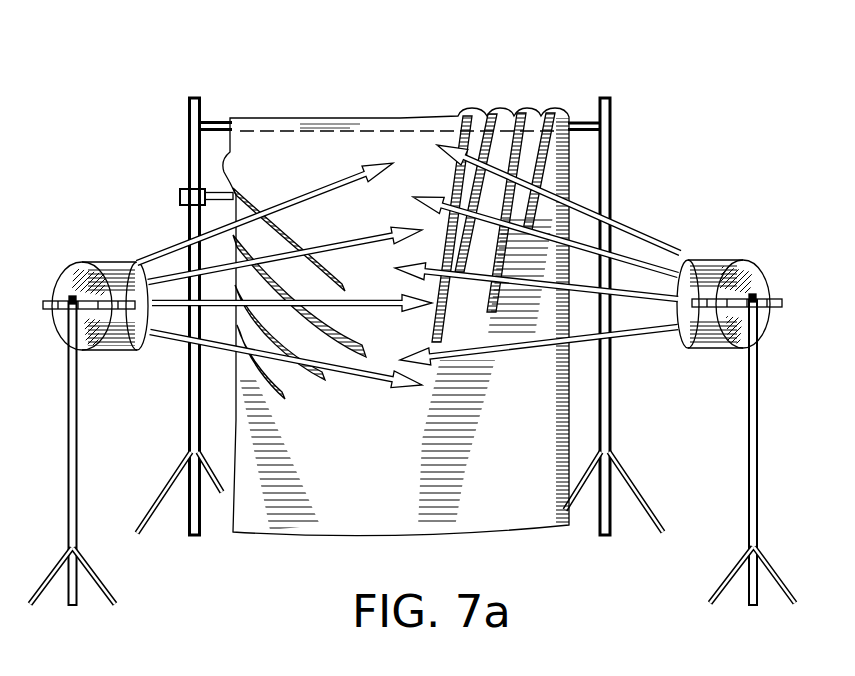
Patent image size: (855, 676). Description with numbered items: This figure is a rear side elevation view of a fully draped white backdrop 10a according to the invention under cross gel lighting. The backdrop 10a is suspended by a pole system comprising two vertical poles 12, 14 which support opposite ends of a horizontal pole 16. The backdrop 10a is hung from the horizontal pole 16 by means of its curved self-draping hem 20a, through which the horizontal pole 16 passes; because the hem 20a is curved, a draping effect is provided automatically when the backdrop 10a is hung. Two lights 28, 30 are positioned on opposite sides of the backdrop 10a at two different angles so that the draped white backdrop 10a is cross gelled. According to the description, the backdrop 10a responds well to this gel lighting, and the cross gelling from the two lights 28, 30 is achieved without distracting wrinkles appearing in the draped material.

The backdrop 10a is at (390, 465).
The vertical pole 12 is at (611, 145).
The vertical pole 14 is at (192, 226).
The horizontal pole 16 is at (580, 122).
The curved self-draping hem 20a is at (323, 118).
The light 28 is at (99, 262).
The light 30 is at (725, 263).